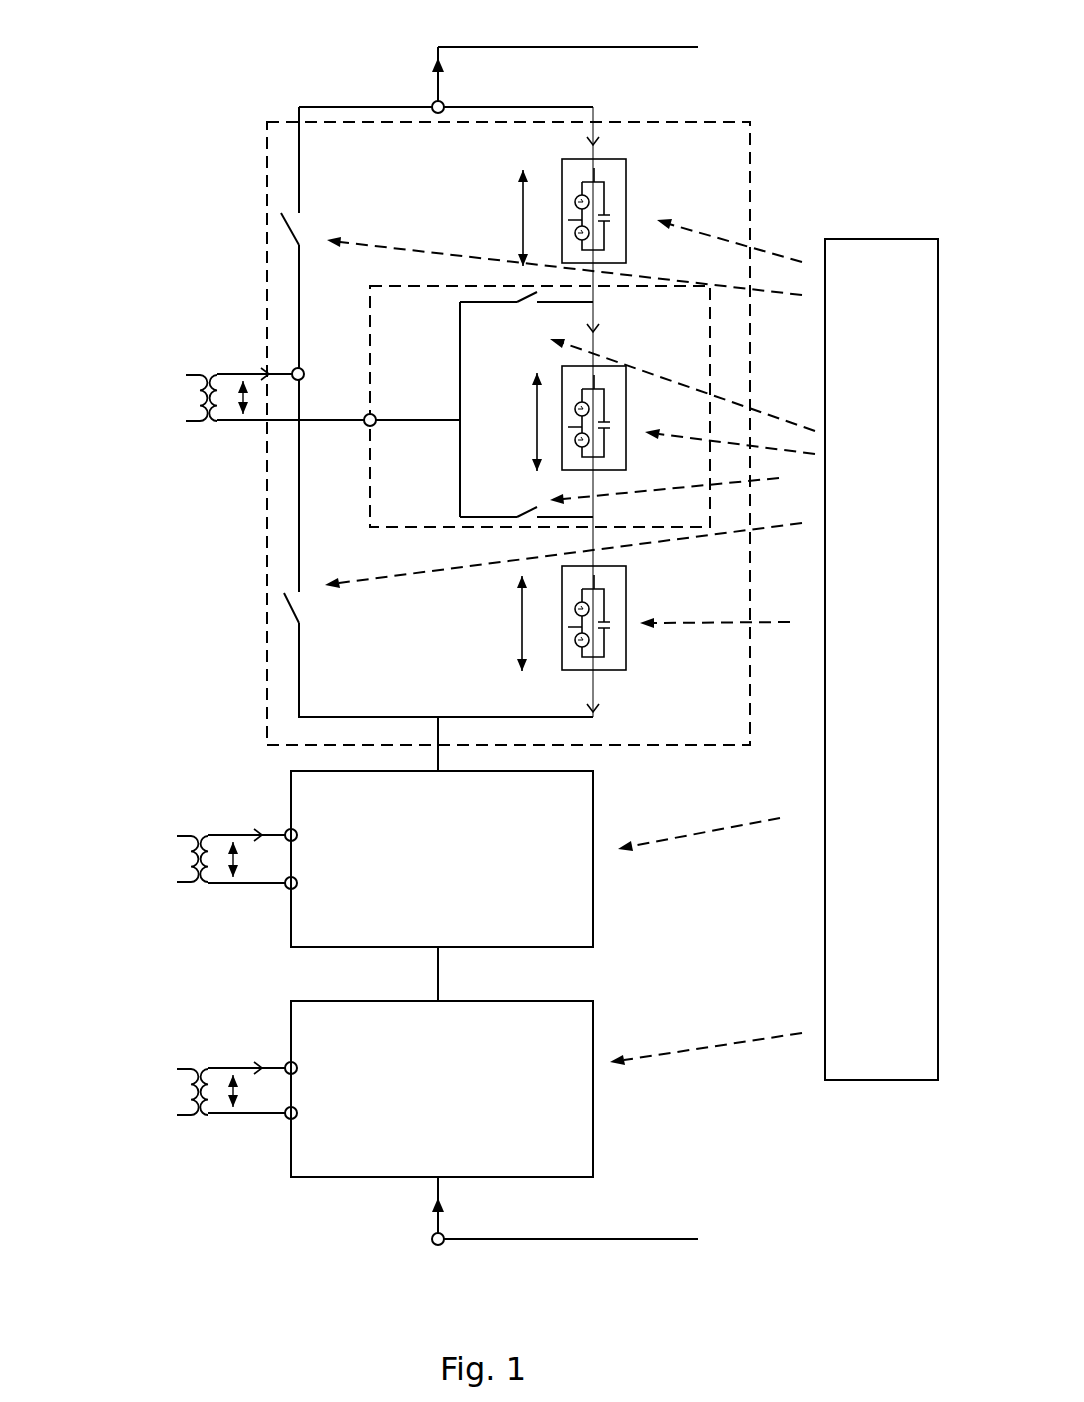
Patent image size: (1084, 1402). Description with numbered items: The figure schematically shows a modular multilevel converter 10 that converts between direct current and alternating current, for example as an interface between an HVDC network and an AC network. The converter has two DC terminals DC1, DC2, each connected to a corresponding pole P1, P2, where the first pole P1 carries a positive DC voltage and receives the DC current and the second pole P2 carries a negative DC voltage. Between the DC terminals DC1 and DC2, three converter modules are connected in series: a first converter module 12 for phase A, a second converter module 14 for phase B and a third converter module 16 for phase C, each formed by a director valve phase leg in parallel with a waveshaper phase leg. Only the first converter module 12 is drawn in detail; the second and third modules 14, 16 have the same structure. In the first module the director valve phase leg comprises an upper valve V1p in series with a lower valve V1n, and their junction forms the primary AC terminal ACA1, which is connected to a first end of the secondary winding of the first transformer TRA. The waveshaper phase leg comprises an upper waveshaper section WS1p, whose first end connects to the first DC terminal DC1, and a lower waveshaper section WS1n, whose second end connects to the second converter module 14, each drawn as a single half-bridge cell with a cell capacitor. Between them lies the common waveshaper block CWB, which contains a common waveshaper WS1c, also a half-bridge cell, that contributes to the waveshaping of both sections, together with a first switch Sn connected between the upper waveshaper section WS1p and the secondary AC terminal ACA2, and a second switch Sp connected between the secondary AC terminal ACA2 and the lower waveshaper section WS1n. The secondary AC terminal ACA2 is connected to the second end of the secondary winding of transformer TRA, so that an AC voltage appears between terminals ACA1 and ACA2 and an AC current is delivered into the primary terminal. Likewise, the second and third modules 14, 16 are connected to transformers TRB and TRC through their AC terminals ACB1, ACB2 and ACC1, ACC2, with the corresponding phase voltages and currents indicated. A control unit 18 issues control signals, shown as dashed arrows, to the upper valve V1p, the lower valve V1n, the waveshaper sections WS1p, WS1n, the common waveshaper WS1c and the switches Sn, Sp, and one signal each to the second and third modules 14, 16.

The modular multilevel converter 10 is at (205, 124).
The first converter module 12 is at (267, 575).
The second converter module 14 is at (428, 873).
The third converter module 16 is at (428, 1103).
The control unit 18 is at (868, 673).
The first pole P1 is at (565, 57).
The second pole P2 is at (565, 1237).
The first DC terminal DC1 is at (433, 103).
The second DC terminal DC2 is at (443, 1243).
The first transformer TRA is at (240, 385).
The second transformer TRB is at (188, 846).
The third transformer TRC is at (182, 1078).
The primary AC terminal ACA1 is at (294, 368).
The secondary AC terminal ACA2 is at (364, 421).
The primary AC terminal of phase B ACB1 is at (287, 830).
The secondary AC terminal of phase B ACB2 is at (287, 888).
The primary AC terminal of phase C ACC1 is at (288, 1063).
The secondary AC terminal of phase C ACC2 is at (287, 1118).
The upper valve V1p is at (329, 218).
The lower valve V1n is at (324, 615).
The upper waveshaper section WS1p is at (566, 196).
The common waveshaper WS1c is at (627, 422).
The lower waveshaper section WS1n is at (559, 643).
The common waveshaper block CWB is at (386, 334).
The first switch Sn is at (535, 315).
The second switch Sp is at (519, 501).